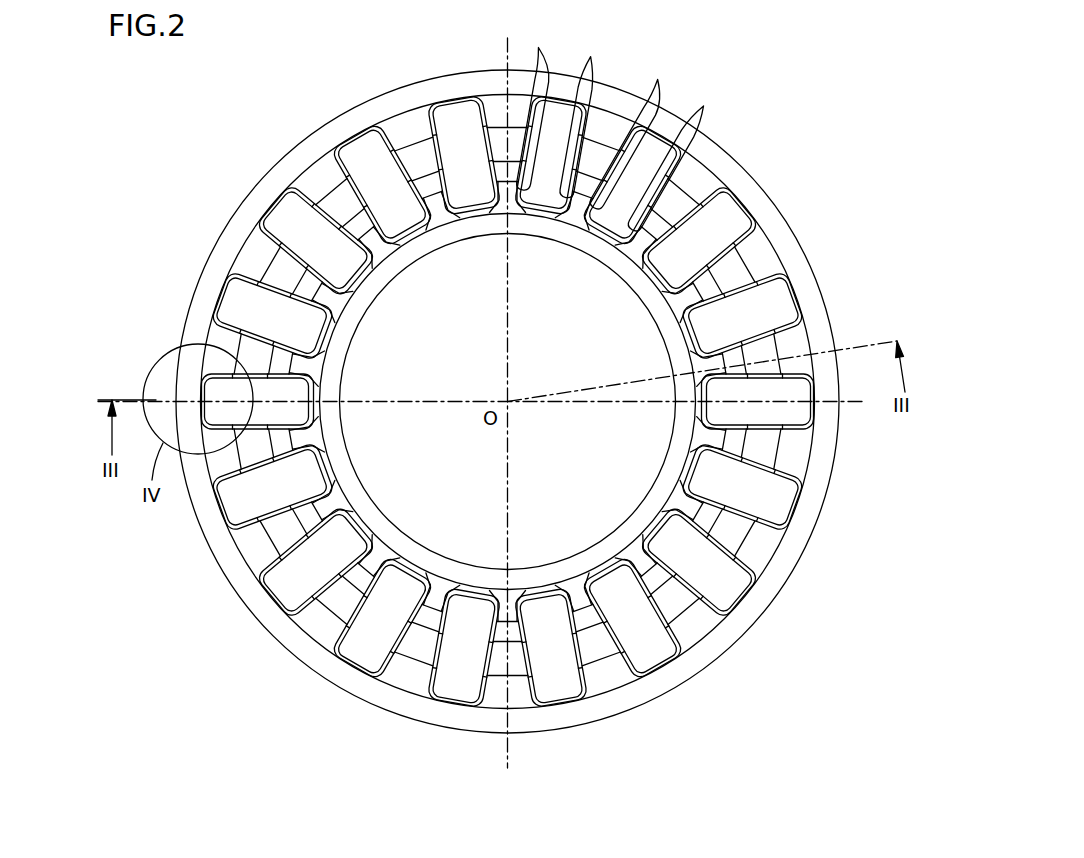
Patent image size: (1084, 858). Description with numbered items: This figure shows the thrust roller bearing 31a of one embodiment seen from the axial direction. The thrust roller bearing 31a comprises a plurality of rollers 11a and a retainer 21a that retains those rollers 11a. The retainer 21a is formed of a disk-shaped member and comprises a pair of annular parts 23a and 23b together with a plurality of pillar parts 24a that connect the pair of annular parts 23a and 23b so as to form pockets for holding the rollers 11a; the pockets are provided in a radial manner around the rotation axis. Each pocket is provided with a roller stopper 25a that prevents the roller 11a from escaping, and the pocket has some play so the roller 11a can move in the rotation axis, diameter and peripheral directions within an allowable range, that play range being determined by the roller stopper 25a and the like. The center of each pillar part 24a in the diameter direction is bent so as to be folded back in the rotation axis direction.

The roller 11a is at (555, 115).
The retainer 21a is at (724, 167).
The annular part 23a is at (770, 226).
The annular part 23b is at (628, 277).
The pillar part 24a is at (593, 157).
The roller stopper 25a is at (541, 44).
The thrust roller bearing 31a is at (768, 112).